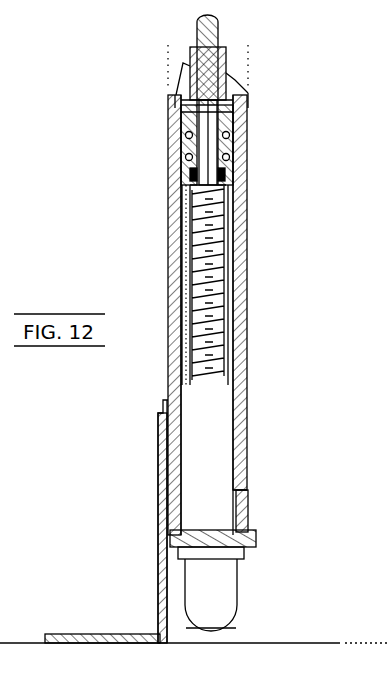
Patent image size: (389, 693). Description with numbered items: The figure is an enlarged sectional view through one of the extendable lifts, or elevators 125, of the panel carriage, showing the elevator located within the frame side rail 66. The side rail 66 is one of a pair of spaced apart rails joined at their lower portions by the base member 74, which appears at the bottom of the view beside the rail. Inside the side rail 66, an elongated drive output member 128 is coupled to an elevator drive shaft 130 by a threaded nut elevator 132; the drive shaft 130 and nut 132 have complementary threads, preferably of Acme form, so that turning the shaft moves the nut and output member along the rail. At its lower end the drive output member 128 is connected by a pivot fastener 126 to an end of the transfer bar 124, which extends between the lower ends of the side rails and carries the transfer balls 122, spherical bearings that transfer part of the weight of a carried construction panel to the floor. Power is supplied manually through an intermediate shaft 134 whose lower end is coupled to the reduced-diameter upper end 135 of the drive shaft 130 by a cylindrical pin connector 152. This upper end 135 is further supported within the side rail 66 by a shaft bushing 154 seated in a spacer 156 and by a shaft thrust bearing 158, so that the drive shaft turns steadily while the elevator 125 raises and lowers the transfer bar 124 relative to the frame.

The elevator 125 is at (127, 245).
The base member 74 is at (160, 480).
The side rail 66 is at (246, 383).
The drive output member 128 is at (238, 490).
The transfer bar 124 is at (248, 512).
The pivot fastener 126 is at (256, 537).
The transfer ball 122 is at (208, 592).
The threaded nut elevator 132 is at (243, 215).
The elevator drive shaft 130 is at (207, 278).
The spacer 156 is at (243, 150).
The shaft thrust bearing 158 is at (243, 185).
The shaft bushing 154 is at (240, 125).
The upper end of drive shaft 135 is at (245, 103).
The cylindrical pin connector 152 is at (228, 71).
The intermediate shaft 134 is at (220, 36).